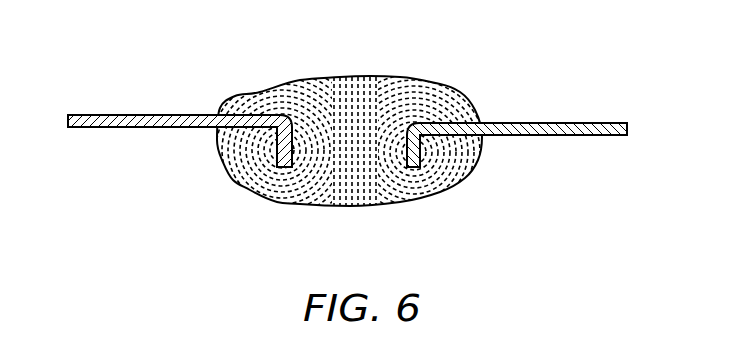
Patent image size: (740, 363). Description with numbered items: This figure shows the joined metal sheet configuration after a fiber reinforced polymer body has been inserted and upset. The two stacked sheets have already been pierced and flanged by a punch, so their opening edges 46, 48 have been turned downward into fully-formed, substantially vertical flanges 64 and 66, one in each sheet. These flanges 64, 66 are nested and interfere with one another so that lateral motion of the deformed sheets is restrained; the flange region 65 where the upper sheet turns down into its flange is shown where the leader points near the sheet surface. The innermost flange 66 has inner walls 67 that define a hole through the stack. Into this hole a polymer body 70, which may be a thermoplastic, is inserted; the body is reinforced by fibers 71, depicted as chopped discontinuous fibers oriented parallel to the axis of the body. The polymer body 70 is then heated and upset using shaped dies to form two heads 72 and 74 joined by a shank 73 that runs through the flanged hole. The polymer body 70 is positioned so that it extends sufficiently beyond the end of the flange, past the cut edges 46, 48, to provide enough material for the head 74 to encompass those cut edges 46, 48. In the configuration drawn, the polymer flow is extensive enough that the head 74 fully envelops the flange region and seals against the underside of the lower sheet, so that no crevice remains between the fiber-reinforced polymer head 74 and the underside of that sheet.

The opening edge 46 is at (278, 170).
The opening edge 48 is at (287, 172).
The flange 64 is at (436, 165).
The lead entry region 65 is at (285, 132).
The flange 66 is at (312, 148).
The inner walls 67 is at (398, 148).
The polymer body 70 is at (441, 86).
The fibers 71 is at (316, 138).
The head 72 is at (403, 77).
The shank 73 is at (278, 158).
The head 74 is at (458, 186).